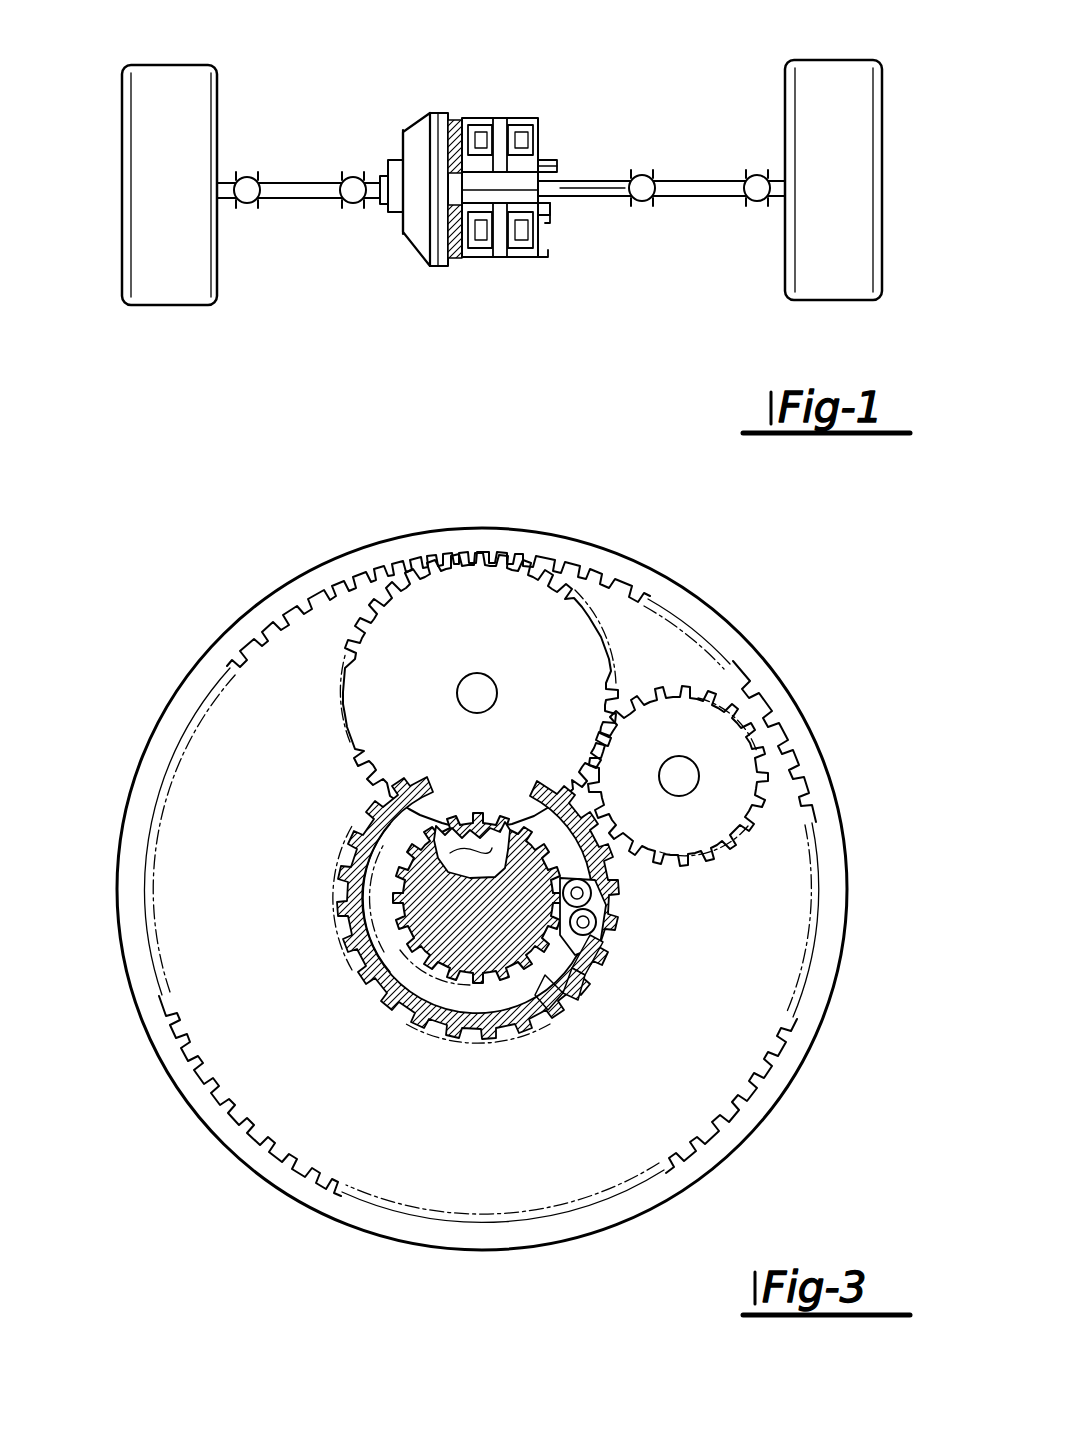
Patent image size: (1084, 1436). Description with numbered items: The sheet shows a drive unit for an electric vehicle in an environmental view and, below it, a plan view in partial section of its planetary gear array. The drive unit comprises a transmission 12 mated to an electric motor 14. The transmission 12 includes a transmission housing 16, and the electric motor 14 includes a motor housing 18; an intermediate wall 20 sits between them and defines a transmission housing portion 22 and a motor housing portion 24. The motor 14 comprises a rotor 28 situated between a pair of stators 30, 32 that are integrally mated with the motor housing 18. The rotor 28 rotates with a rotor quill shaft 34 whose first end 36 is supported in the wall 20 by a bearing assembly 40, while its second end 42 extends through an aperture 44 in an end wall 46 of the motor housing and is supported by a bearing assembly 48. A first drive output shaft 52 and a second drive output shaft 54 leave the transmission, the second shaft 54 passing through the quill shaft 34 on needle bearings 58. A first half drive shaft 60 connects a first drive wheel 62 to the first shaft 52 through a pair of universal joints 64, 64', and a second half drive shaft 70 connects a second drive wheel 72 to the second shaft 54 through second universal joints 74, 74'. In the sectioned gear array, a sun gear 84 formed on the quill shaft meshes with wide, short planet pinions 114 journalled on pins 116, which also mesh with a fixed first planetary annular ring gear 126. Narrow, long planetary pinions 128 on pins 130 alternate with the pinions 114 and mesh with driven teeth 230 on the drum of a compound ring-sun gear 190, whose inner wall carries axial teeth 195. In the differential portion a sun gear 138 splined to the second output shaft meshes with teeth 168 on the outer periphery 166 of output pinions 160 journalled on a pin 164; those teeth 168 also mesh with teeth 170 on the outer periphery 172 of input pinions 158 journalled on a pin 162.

In FIG. 1, the transmission 12 is at (418, 133).
In FIG. 1, the electric motor 14 is at (526, 118).
In FIG. 1, the transmission housing 16 is at (432, 118).
In FIG. 1, the motor housing 18 is at (520, 120).
In FIG. 1, the intermediate wall 20 is at (466, 130).
In FIG. 1, the transmission housing portion 22 is at (408, 137).
In FIG. 1, the motor housing portion 24 is at (538, 128).
In FIG. 1, the rotor 28 is at (500, 258).
In FIG. 1, the stator 30 is at (490, 260).
In FIG. 1, the stator 32 is at (525, 250).
In FIG. 1, the rotor quill shaft 34 is at (540, 160).
In FIG. 1, the first end of the quill shaft 36 is at (462, 196).
In FIG. 1, the bearing assembly 40 is at (455, 252).
In FIG. 1, the second end of the quill shaft 42 is at (551, 215).
In FIG. 1, the aperture 44 is at (550, 170).
In FIG. 1, the end wall 46 is at (540, 142).
In FIG. 1, the bearing assembly 48 is at (550, 226).
In FIG. 1, the first drive output shaft 52 is at (370, 202).
In FIG. 1, the second drive output shaft 54 is at (618, 191).
In FIG. 1, the second set of needle bearings 58 is at (556, 200).
In FIG. 1, the first half drive shaft 60 is at (300, 185).
In FIG. 1, the first drive wheel 62 is at (172, 275).
In FIG. 1, the first output shaft universal joint 64 is at (248, 255).
In FIG. 1, the first output shaft universal joint 64' is at (353, 255).
In FIG. 1, the second half drive shaft 70 is at (718, 182).
In FIG. 1, the second drive wheel 72 is at (835, 75).
In FIG. 1, the second universal joint 74 is at (749, 247).
In FIG. 1, the second universal joint 74' is at (655, 248).
In FIG. 3, the sun gear 84 is at (476, 843).
In FIG. 3, the planet pinion 114 is at (488, 631).
In FIG. 3, the pin 116 is at (480, 690).
In FIG. 3, the first planetary annular ring gear 126 is at (713, 1153).
In FIG. 3, the planetary pinion 128 is at (700, 751).
In FIG. 3, the pin 130 is at (681, 774).
In FIG. 3, the sun gear 138 is at (473, 950).
In FIG. 3, the input pinion 158 is at (590, 940).
In FIG. 3, the output pinion 160 is at (592, 891).
In FIG. 3, the pin 162 is at (594, 952).
In FIG. 3, the pin 164 is at (600, 926).
In FIG. 3, the outer periphery 166 is at (600, 903).
In FIG. 3, the teeth 168 is at (598, 918).
In FIG. 3, the teeth 170 is at (582, 985).
In FIG. 3, the outer periphery 172 is at (570, 1000).
In FIG. 3, the compound ring-sun gear 190 is at (347, 930).
In FIG. 3, the axial teeth 195 is at (375, 965).
In FIG. 3, the driven teeth 230 is at (395, 1000).